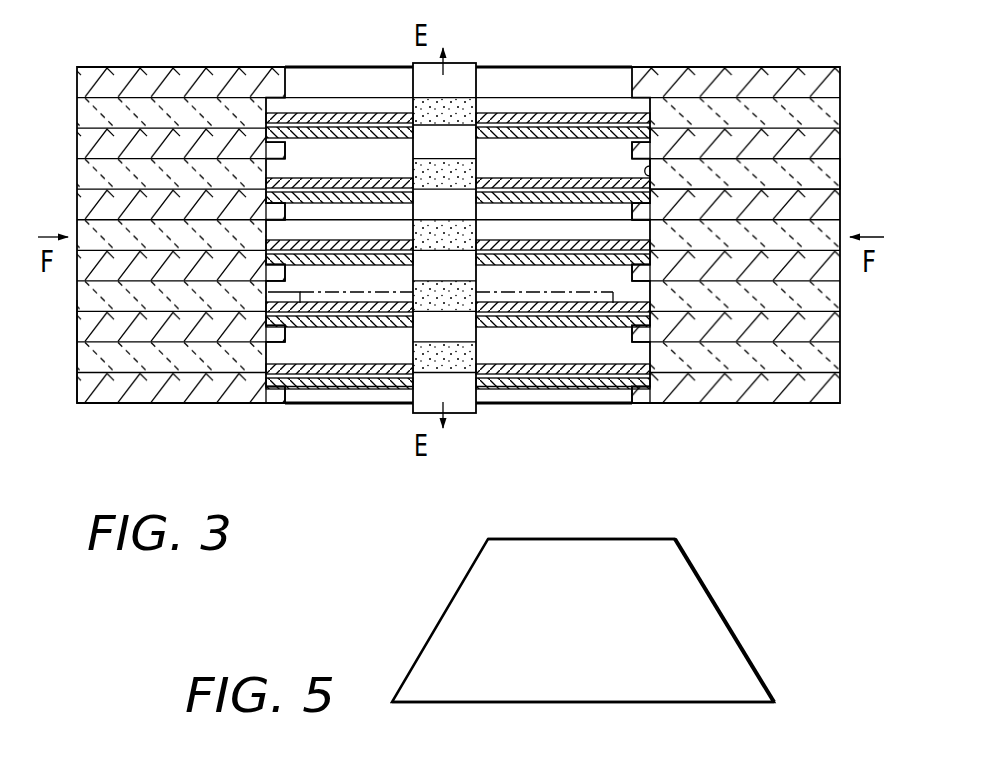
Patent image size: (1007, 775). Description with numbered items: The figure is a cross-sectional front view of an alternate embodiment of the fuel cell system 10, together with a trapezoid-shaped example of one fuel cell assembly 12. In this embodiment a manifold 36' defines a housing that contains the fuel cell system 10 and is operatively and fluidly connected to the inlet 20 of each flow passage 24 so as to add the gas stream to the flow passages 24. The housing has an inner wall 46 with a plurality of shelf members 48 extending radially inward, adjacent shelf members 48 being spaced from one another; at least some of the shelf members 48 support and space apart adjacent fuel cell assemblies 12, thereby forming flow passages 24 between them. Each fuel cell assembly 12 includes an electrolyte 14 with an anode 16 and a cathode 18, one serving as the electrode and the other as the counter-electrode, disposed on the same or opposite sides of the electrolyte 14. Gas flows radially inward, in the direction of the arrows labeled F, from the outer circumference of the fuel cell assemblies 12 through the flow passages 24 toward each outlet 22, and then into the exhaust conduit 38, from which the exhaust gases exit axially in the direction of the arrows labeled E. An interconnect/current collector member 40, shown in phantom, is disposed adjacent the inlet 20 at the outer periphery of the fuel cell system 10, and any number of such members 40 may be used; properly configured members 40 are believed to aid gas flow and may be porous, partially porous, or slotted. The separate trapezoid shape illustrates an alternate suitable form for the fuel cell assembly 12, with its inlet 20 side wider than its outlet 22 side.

In FIG. 3, the fuel cell system 10 is at (58, 66).
In FIG. 3, the fuel cell assembly 12 is at (548, 111).
In FIG. 5, the fuel cell assembly 12 is at (729, 626).
In FIG. 3, the electrolyte 14 is at (542, 376).
In FIG. 3, the anode 16 is at (588, 370).
In FIG. 3, the cathode 18 is at (514, 388).
In FIG. 3, the inlet 20 is at (648, 172).
In FIG. 5, the inlet 20 is at (702, 704).
In FIG. 3, the outlet 22 is at (406, 170).
In FIG. 5, the outlet 22 is at (662, 538).
In FIG. 3, the flow passage 24 is at (405, 103).
In FIG. 3, the manifold 36' is at (60, 386).
In FIG. 3, the exhaust conduit 38 is at (463, 63).
In FIG. 3, the interconnect/current collector member 40 is at (268, 294).
In FIG. 3, the inner wall 46 is at (266, 103).
In FIG. 3, the shelf member 48 is at (636, 142).